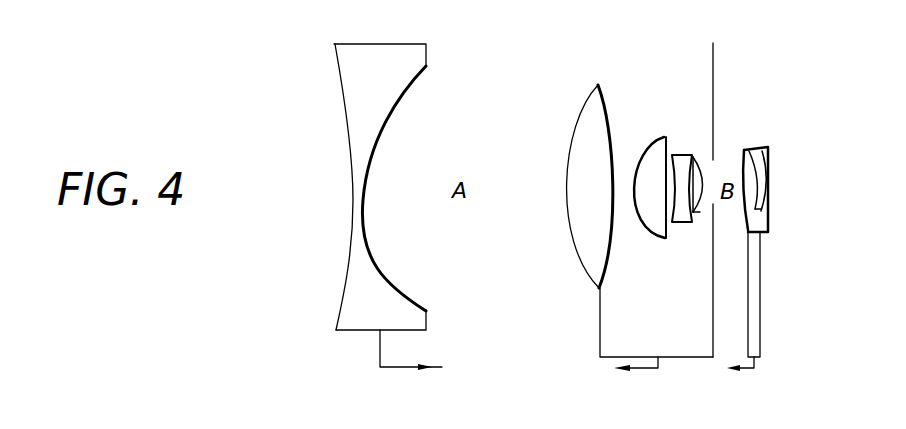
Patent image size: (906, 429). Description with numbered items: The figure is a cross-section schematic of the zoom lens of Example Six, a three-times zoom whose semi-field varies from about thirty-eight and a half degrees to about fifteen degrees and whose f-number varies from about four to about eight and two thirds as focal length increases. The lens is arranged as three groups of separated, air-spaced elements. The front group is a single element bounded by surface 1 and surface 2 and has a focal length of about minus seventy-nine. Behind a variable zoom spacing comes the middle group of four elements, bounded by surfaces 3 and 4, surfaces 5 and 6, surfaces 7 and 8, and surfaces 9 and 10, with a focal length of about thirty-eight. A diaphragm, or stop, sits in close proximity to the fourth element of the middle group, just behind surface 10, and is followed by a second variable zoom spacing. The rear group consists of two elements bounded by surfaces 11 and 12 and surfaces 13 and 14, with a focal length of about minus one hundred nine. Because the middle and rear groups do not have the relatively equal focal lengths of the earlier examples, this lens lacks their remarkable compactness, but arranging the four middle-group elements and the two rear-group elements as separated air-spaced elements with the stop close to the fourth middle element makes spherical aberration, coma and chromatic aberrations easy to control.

The lens surface 1 is at (347, 118).
The lens surface 2 is at (394, 97).
The lens surface 3 is at (568, 152).
The lens surface 4 is at (612, 152).
The lens surface 5 is at (634, 206).
The lens surface 6 is at (670, 207).
The lens surface 7 is at (669, 172).
The lens surface 8 is at (703, 213).
The lens surface 9 is at (692, 150).
The lens surface 10 is at (705, 180).
The lens surface 11 is at (743, 207).
The lens surface 12 is at (753, 152).
The lens surface 13 is at (762, 208).
The lens surface 14 is at (771, 157).